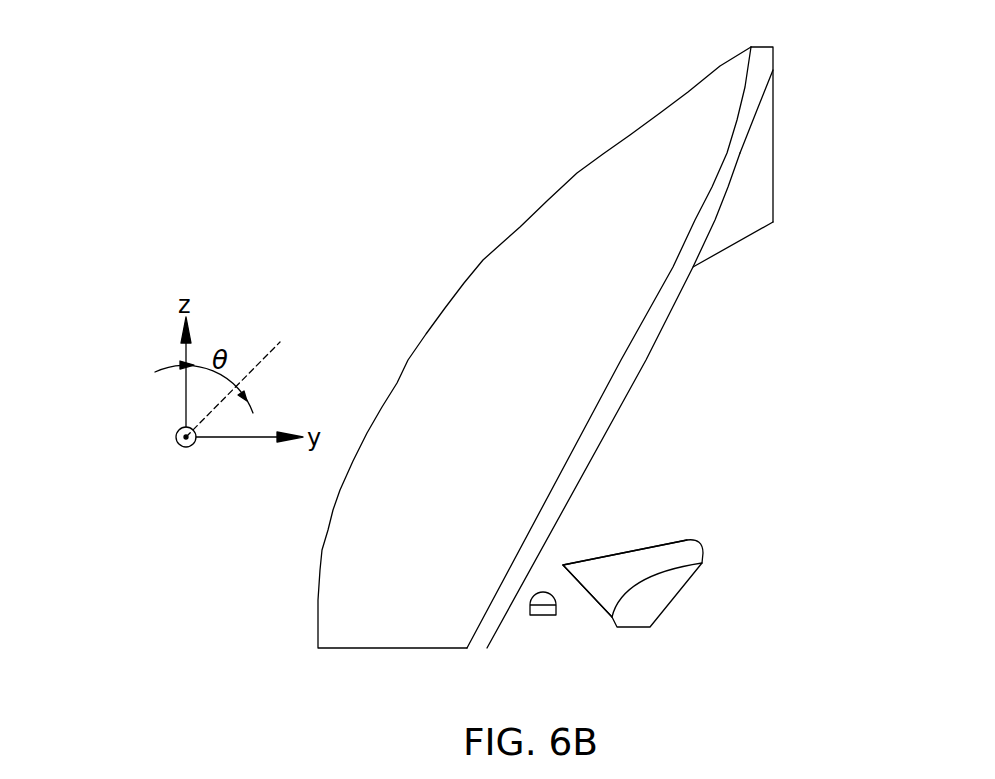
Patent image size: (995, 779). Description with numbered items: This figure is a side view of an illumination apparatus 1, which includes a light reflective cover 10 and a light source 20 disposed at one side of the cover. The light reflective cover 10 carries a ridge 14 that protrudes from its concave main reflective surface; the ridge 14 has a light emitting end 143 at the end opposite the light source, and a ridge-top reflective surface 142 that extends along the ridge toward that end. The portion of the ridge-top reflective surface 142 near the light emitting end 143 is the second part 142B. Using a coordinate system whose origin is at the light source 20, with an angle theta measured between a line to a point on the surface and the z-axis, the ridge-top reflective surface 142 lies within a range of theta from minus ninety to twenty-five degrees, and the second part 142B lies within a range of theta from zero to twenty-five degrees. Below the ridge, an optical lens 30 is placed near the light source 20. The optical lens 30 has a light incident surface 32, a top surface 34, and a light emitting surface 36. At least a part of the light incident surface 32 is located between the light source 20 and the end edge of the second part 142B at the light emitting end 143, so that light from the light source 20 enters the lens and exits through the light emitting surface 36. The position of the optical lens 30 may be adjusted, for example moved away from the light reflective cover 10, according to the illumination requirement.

The illumination apparatus 1 is at (388, 173).
The light reflective cover 10 is at (688, 92).
The ridge 14 is at (773, 112).
The ridge-top reflective surface 142 is at (737, 242).
The second part 142B is at (758, 172).
The light emitting end 143 is at (773, 222).
The light source 20 is at (543, 620).
The optical lens 30 is at (635, 627).
The light incident surface 32 is at (602, 597).
The top surface 34 is at (662, 552).
The light emitting surface 36 is at (688, 580).